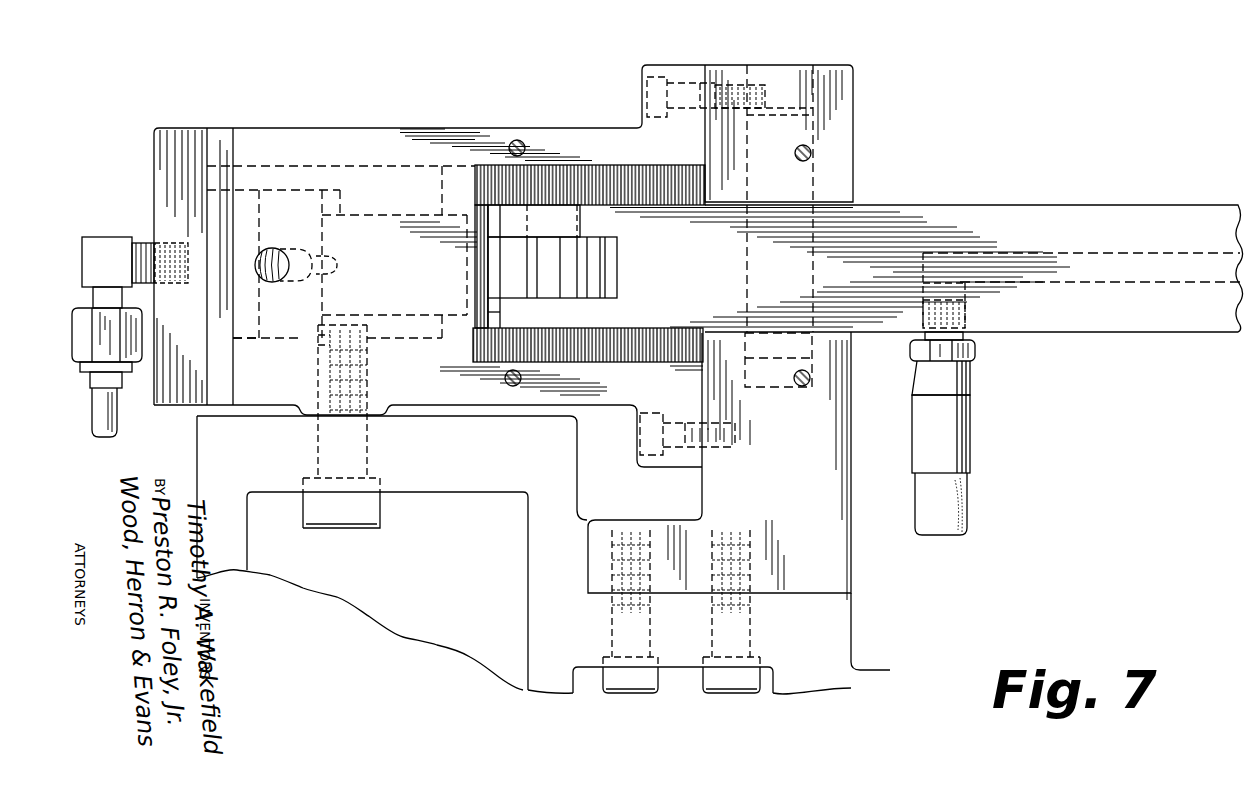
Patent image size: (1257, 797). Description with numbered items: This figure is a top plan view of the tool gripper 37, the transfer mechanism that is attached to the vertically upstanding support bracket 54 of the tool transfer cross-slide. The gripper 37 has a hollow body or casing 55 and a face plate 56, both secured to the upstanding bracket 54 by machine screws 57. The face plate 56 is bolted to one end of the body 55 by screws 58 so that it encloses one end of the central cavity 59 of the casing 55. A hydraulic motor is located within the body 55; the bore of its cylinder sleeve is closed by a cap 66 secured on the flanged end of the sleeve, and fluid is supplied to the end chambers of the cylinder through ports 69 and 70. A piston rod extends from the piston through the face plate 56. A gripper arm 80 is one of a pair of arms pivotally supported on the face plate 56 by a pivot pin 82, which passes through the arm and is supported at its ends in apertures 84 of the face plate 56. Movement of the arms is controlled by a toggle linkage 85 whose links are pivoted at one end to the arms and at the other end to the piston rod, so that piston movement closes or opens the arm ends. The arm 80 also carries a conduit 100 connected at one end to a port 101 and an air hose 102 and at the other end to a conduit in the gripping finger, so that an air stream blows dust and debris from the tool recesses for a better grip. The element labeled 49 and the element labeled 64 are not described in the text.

The tool gripper 37 is at (903, 184).
The shaft 49 is at (1042, 216).
The support bracket 54 is at (458, 485).
The body 55 is at (553, 140).
The face plate 56 is at (845, 97).
The machine screws 57 is at (350, 513).
The screws 58 is at (663, 73).
The central cavity 59 is at (644, 173).
The passage 64 is at (252, 203).
The cap 66 is at (173, 140).
The port 69 is at (157, 238).
The port 70 is at (276, 284).
The gripper arm 80 is at (1145, 322).
The pivot pin 82 is at (782, 80).
The apertures 84 is at (822, 80).
The toggle linkage 85 is at (593, 268).
The conduit 100 is at (1146, 252).
The port 101 is at (965, 321).
The air hose 102 is at (940, 523).